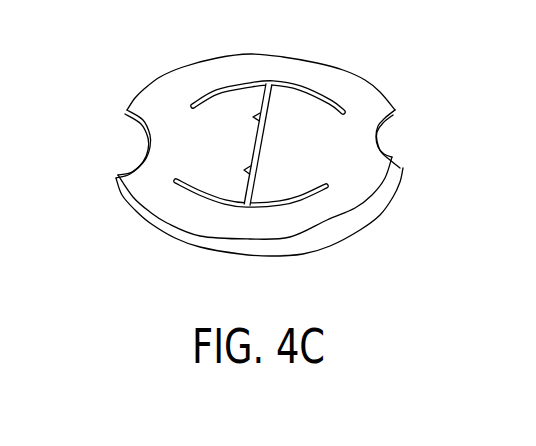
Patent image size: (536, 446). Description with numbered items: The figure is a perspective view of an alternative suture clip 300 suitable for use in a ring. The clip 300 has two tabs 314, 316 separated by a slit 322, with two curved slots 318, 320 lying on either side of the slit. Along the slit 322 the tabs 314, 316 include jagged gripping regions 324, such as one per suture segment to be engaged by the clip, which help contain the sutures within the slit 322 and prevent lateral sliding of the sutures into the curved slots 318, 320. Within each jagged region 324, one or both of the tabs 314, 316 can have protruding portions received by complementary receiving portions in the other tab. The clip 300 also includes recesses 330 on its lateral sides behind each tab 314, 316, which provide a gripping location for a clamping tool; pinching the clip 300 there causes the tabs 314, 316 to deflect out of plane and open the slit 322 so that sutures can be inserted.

The suture clip 300 is at (170, 229).
The tab 314 is at (210, 150).
The tab 316 is at (313, 153).
The curved slot 318 is at (282, 204).
The curved slot 320 is at (322, 93).
The slit 322 is at (213, 113).
The jagged gripping region 324 is at (268, 117).
The recess 330 is at (118, 175).